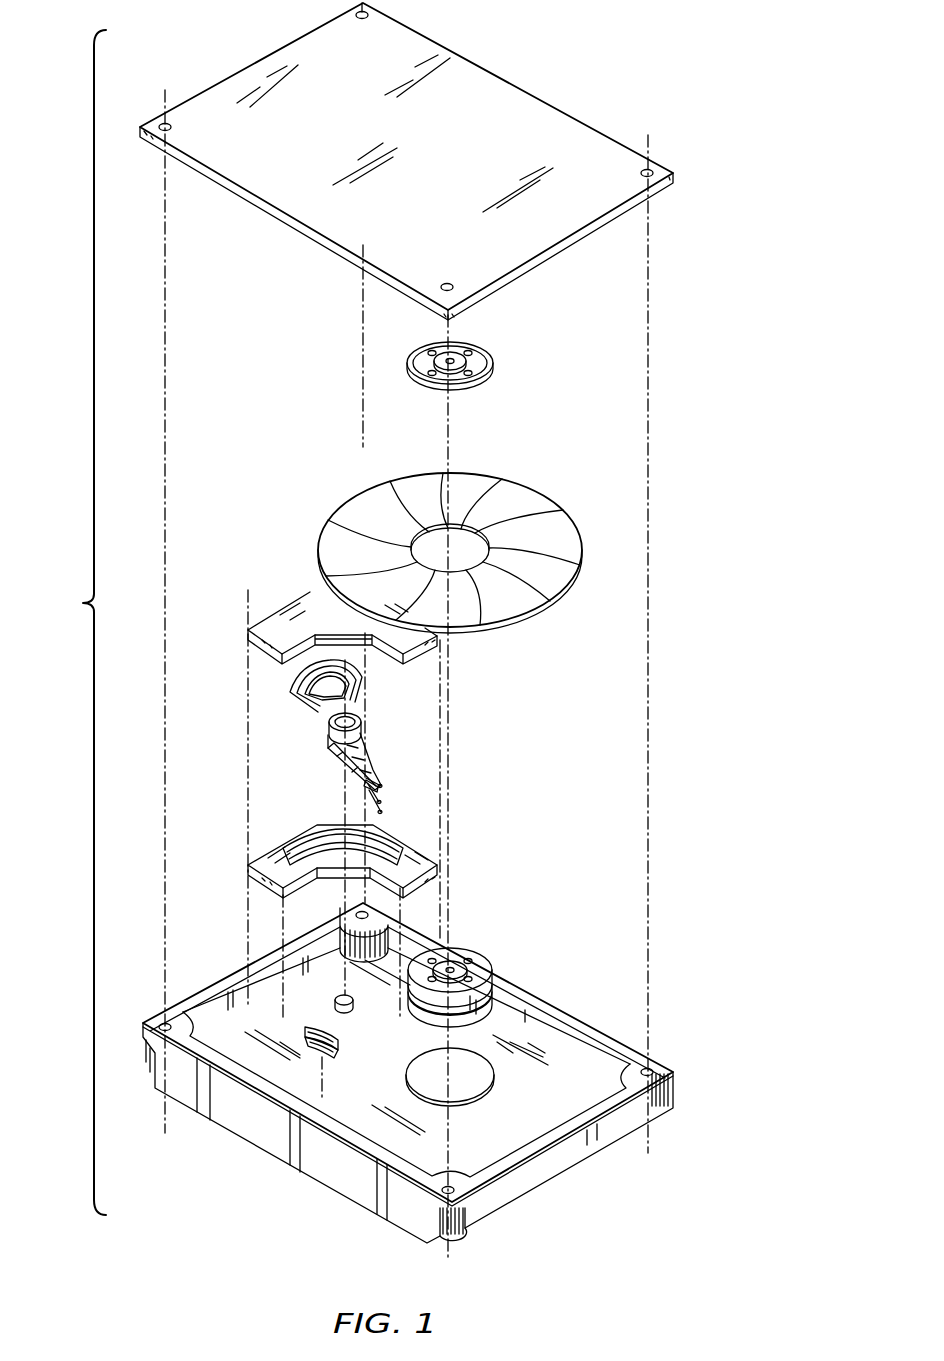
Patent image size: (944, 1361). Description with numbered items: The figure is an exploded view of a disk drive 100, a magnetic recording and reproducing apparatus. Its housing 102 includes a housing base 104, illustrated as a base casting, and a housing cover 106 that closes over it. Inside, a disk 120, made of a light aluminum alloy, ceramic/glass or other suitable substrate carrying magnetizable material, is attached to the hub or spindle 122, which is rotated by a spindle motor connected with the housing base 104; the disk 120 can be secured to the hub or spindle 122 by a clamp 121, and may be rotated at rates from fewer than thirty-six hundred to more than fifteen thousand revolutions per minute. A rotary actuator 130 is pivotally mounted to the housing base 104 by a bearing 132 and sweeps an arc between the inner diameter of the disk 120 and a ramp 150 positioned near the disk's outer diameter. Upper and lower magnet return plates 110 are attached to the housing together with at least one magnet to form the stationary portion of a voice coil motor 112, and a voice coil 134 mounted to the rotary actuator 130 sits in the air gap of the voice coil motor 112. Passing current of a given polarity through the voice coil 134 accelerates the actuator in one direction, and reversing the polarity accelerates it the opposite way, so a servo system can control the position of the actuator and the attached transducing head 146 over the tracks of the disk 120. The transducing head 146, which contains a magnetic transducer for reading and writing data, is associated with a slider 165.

The disk drive 100 is at (672, 480).
The housing 102 is at (74, 622).
The housing base 104 is at (255, 1128).
The housing cover 106 is at (493, 87).
The upper and lower magnet return plates 110 is at (268, 657).
The voice coil motor 112 is at (257, 602).
The disk 120 is at (530, 496).
The clamp 121 is at (480, 353).
The hub or spindle 122 is at (470, 954).
The rotary actuator 130 is at (405, 688).
The bearing 132 is at (358, 720).
The voice coil 134 is at (305, 702).
The transducing head 146 is at (382, 788).
The ramp 150 is at (345, 1043).
The slider 165 is at (365, 784).